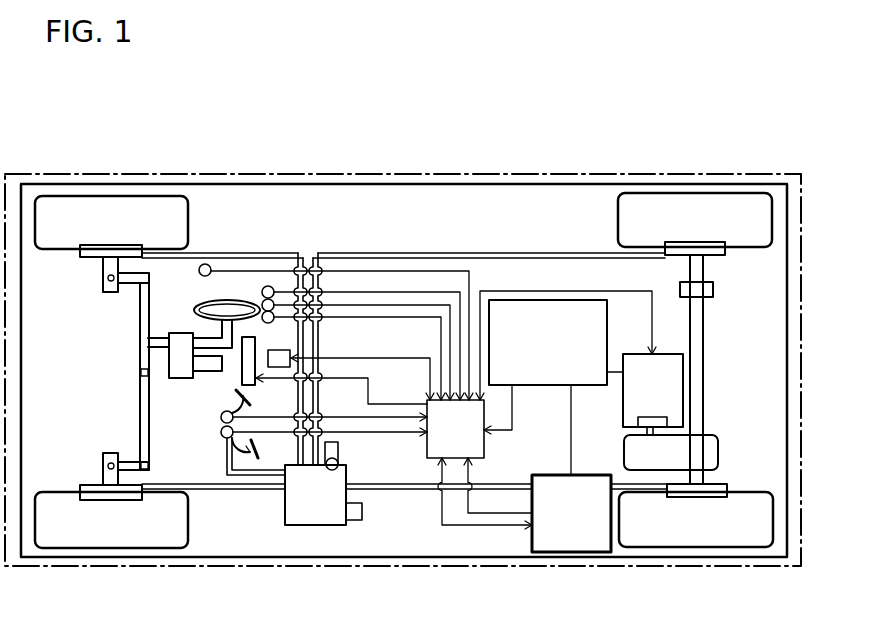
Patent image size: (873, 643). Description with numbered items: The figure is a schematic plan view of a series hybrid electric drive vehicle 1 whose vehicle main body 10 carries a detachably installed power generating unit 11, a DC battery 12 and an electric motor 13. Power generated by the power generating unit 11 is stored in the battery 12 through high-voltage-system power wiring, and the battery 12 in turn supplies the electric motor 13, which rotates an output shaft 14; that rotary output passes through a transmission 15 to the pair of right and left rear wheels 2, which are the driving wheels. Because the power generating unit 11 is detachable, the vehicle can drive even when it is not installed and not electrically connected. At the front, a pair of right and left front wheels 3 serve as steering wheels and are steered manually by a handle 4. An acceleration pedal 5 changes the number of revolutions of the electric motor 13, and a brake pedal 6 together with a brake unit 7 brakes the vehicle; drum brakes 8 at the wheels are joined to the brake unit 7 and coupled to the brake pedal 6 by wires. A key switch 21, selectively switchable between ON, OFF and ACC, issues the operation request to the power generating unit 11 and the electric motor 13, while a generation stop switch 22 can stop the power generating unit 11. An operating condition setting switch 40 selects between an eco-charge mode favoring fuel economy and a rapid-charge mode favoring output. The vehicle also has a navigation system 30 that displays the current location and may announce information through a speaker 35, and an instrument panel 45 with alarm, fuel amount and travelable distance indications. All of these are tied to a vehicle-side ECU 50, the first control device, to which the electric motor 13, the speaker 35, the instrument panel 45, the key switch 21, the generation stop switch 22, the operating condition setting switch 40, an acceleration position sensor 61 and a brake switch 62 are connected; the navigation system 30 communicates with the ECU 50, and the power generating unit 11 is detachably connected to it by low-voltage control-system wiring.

The electric drive vehicle 1 is at (45, 174).
The vehicle main body 10 is at (420, 184).
The rear wheels 2 is at (700, 215).
The front wheels 3 is at (108, 215).
The handle 4 is at (230, 300).
The acceleration pedal 5 is at (250, 398).
The brake pedal 6 is at (259, 451).
The brake unit 7 is at (317, 503).
The drum brakes 8 is at (98, 255).
The power generating unit 11 is at (571, 530).
The battery 12 is at (537, 325).
The electric motor 13 is at (667, 368).
The output shaft 14 is at (656, 432).
The transmission 15 is at (700, 450).
The key switch 21 is at (266, 286).
The generation stop switch 22 is at (273, 314).
The navigation system 30 is at (283, 353).
The speaker 35 is at (205, 263).
The operating condition setting switch 40 is at (274, 303).
The instrument panel 45 is at (248, 360).
The vehicle-side ECU 50 is at (437, 452).
The acceleration position sensor 61 is at (221, 417).
The brake switch 62 is at (222, 436).